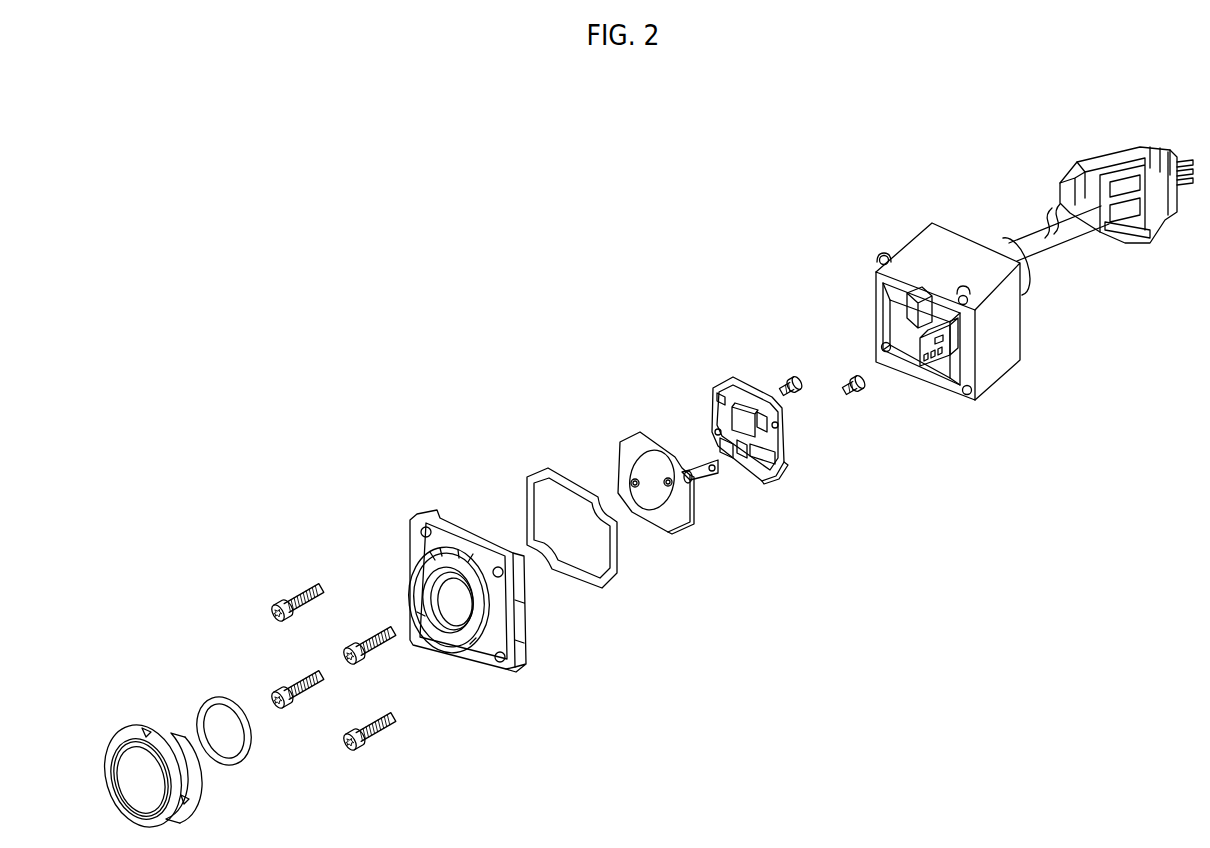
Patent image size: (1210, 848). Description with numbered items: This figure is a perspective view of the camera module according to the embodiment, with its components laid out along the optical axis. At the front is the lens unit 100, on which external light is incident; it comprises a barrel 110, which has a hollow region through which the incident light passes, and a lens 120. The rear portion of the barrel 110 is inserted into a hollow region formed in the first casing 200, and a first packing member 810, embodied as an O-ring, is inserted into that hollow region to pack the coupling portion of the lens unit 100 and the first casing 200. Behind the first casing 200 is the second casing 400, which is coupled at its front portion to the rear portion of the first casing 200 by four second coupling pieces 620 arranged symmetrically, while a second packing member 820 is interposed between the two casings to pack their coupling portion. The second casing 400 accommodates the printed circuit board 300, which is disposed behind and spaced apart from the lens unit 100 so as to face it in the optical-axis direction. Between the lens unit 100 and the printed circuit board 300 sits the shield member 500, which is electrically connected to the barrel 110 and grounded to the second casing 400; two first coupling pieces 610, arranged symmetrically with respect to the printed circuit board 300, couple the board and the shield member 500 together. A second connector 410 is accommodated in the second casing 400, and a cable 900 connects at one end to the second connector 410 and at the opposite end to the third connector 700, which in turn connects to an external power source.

The lens unit 100 is at (135, 652).
The barrel 110 is at (135, 726).
The lens 120 is at (122, 777).
The first packing member 810 is at (207, 697).
The second coupling piece 620 is at (374, 636).
The first casing 200 is at (518, 663).
The second packing member 820 is at (603, 585).
The shield member 500 is at (692, 522).
The printed circuit board 300 is at (786, 463).
The first coupling piece 610 is at (845, 372).
The second casing 400 is at (1000, 367).
The second connector 410 is at (933, 348).
The cable 900 is at (1080, 227).
The third connector 700 is at (1160, 213).